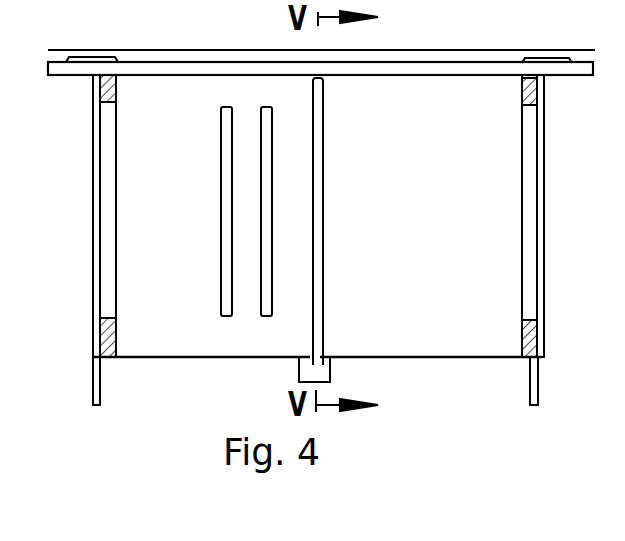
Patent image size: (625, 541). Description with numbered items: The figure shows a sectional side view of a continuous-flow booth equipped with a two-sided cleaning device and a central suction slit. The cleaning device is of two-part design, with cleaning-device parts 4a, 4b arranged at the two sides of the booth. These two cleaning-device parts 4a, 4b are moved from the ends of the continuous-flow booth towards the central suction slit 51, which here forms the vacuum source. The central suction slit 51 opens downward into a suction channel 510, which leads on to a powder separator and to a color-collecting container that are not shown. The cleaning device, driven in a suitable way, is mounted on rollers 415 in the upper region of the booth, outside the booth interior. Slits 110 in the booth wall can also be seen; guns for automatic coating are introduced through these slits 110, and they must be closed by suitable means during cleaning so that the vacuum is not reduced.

The rollers 415 is at (545, 50).
The cleaning-device part 4a is at (116, 343).
The cleaning-device part 4b is at (522, 338).
The slits 110 is at (221, 150).
The central suction slit 51 is at (315, 225).
The suction channel 510 is at (307, 370).